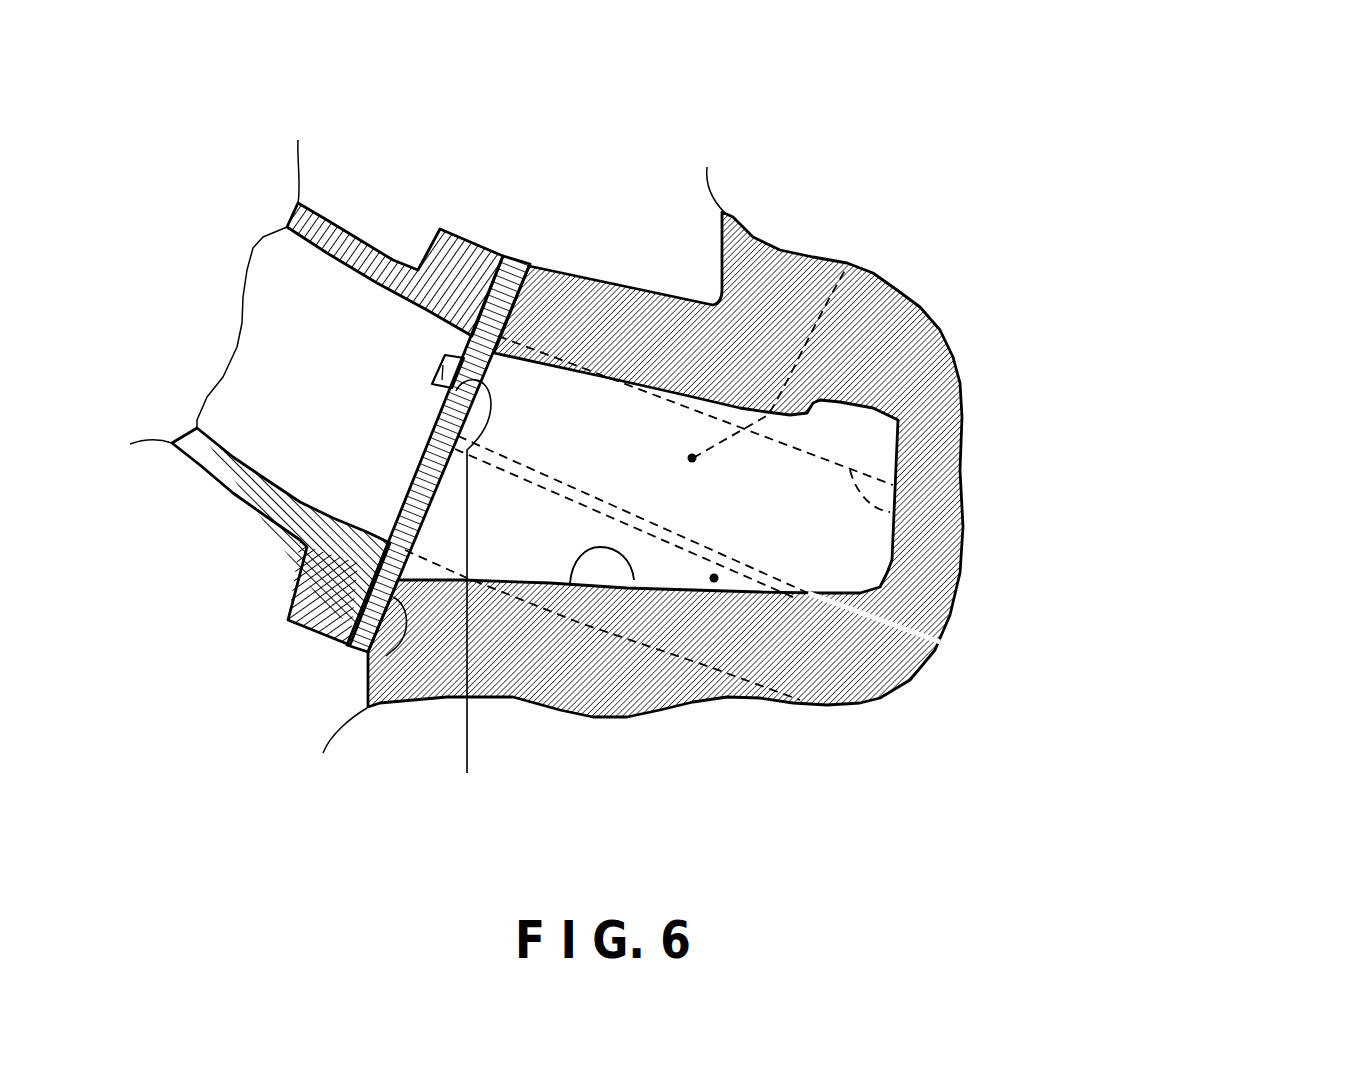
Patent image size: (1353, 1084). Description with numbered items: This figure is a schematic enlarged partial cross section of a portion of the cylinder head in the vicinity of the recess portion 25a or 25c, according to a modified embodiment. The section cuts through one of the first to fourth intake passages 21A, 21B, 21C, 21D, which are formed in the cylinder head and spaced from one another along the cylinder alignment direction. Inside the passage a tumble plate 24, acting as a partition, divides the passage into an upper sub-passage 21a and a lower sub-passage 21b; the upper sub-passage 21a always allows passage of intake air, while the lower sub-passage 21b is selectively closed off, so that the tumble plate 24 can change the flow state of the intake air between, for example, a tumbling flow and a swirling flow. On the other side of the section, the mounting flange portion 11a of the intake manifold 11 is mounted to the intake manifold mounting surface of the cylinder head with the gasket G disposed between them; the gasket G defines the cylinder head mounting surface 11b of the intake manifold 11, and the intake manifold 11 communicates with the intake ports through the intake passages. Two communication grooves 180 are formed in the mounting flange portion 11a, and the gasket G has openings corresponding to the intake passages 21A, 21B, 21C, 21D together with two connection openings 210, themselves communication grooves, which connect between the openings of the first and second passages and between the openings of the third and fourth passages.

The intake manifold 11 is at (370, 248).
The mounting flange portion 11a is at (373, 572).
The cylinder head mounting surface 11b is at (387, 657).
The gasket G is at (516, 262).
The communication groove 180 is at (433, 386).
The connection opening 210 is at (466, 602).
The first intake passage 21A is at (831, 464).
The second intake passage 21B is at (831, 464).
The third intake passage 21C is at (831, 464).
The fourth intake passage 21D is at (957, 458).
The upper sub-passage 21a is at (847, 267).
The lower sub-passage 21b is at (664, 693).
The tumble plate 24 is at (940, 647).
The recess portion 25a is at (639, 687).
The recess portion 25c is at (634, 580).